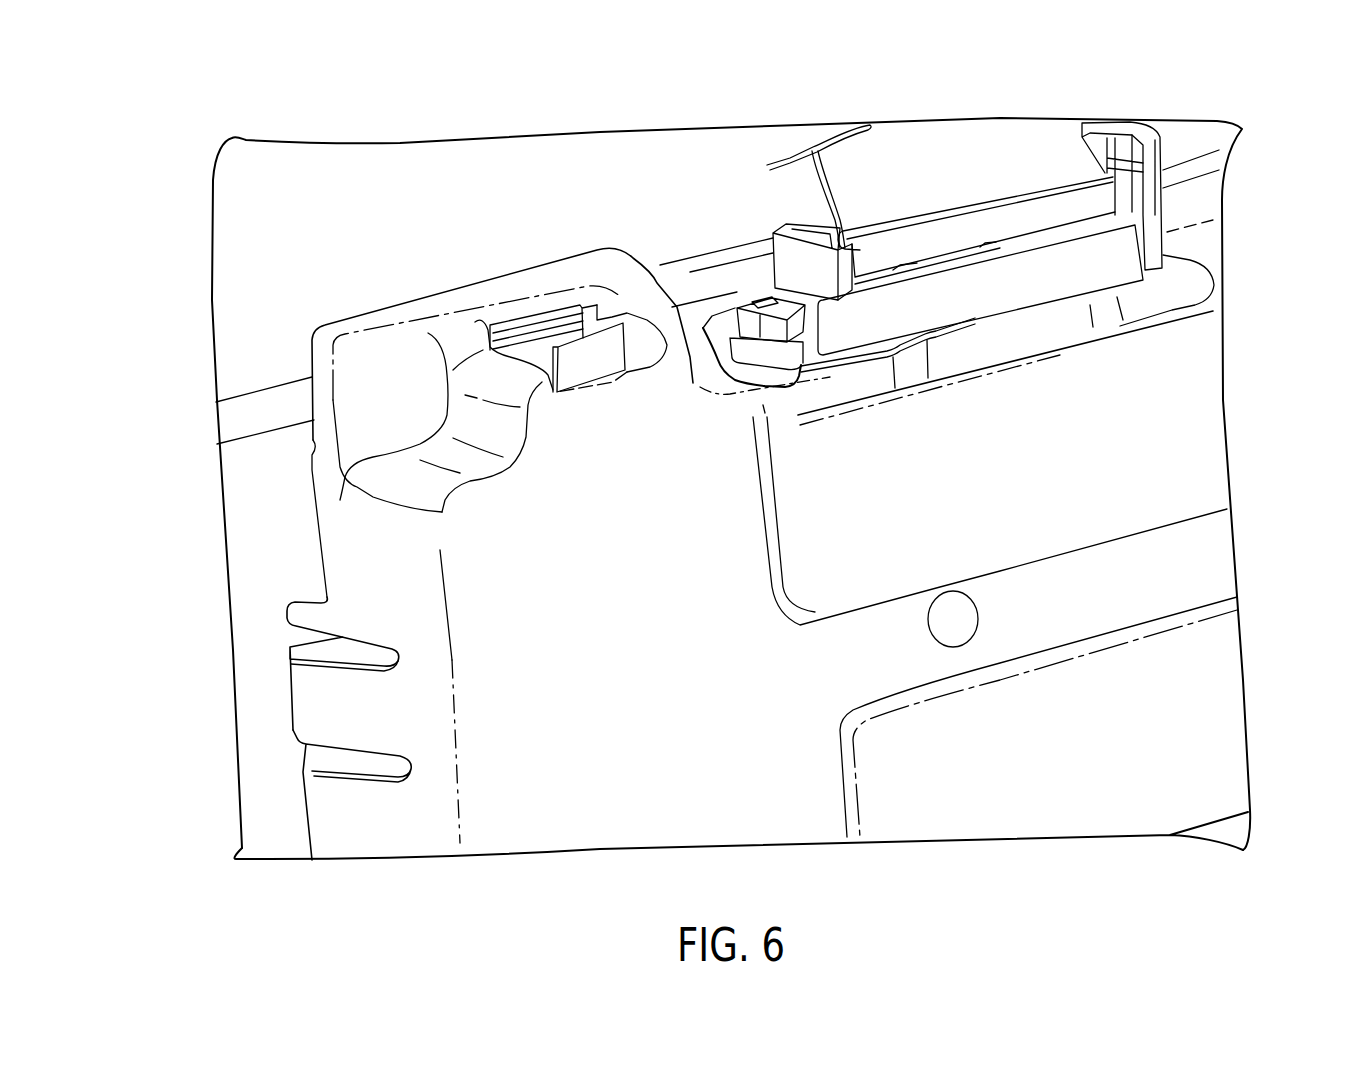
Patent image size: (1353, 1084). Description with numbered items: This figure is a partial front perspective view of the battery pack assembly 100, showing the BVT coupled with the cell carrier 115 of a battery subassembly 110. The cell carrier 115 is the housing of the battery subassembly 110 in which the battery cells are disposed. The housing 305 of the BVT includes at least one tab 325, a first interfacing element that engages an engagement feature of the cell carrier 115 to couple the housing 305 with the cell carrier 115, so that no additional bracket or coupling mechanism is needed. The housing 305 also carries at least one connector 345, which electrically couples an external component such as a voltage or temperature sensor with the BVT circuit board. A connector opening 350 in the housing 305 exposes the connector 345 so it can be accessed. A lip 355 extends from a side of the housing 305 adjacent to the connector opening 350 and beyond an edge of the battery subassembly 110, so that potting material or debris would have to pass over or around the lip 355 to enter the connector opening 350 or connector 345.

The battery pack assembly 100 is at (141, 133).
The battery subassembly 110 is at (513, 829).
The cell carrier 115 is at (247, 569).
The housing 305 is at (1197, 433).
The tab 325 is at (289, 713).
The connector 345 is at (566, 330).
The connector opening 350 is at (631, 350).
The lip 355 is at (458, 300).